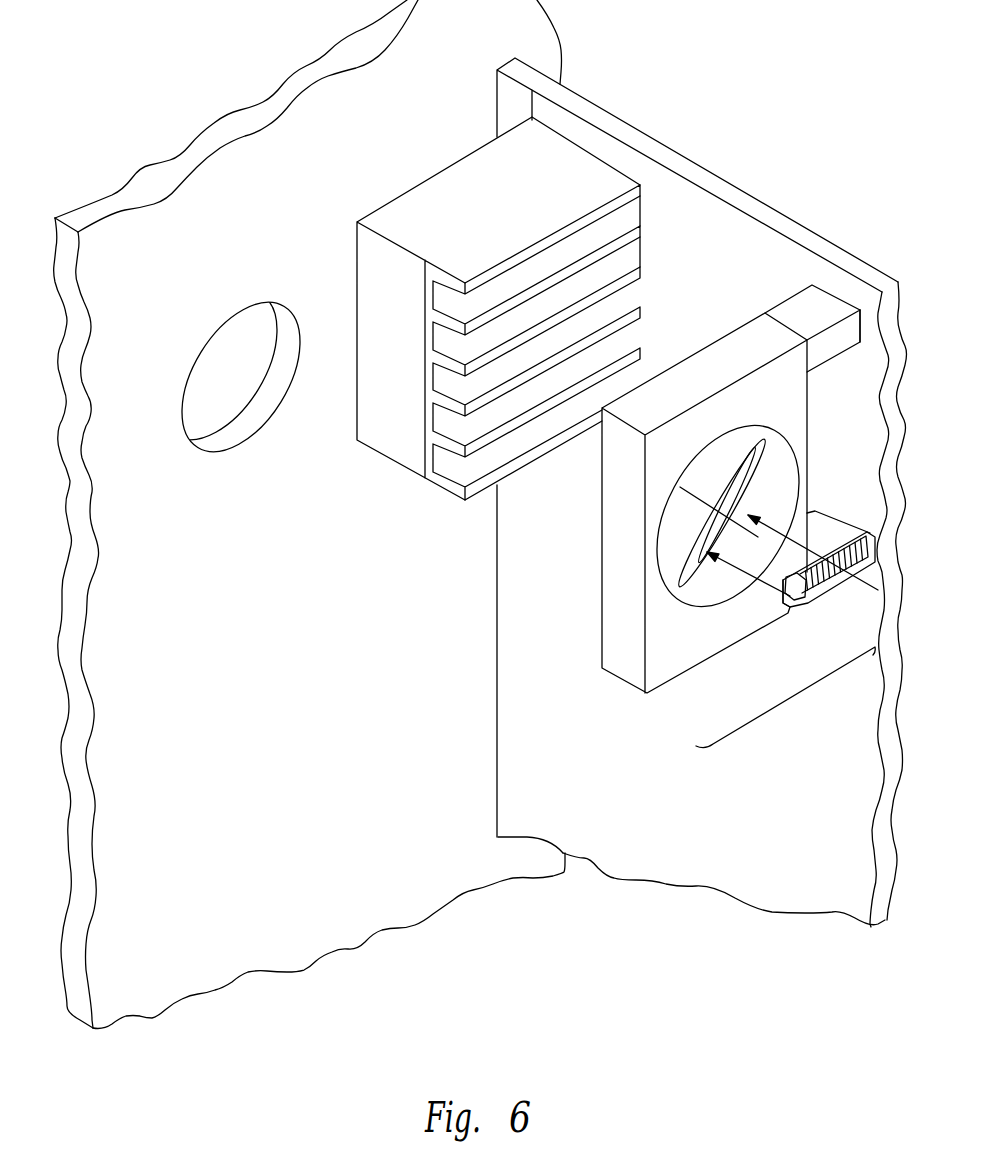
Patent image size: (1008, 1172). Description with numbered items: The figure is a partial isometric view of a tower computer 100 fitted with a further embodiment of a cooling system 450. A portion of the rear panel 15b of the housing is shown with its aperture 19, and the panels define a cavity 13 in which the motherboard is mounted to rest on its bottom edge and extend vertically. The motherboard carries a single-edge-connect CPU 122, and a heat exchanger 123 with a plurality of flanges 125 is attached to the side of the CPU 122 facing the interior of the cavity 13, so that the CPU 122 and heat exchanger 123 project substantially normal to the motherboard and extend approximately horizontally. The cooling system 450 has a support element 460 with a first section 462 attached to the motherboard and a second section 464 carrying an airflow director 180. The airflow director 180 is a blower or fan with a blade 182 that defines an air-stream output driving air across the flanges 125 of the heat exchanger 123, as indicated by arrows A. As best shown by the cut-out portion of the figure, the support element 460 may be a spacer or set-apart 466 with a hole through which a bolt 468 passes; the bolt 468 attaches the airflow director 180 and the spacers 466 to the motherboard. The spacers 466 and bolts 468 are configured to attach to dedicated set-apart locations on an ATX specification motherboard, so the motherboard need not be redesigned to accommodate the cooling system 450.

The cavity 13 is at (391, 735).
The rear panel 15b is at (127, 190).
The aperture 19 is at (278, 362).
The tower computer 100 is at (675, 88).
The single-edge-connect CPU 122 is at (517, 308).
The heat exchanger 123 is at (428, 264).
The flanges 125 is at (640, 272).
The airflow director 180 is at (730, 535).
The blade 182 is at (766, 458).
The cooling system 450 is at (810, 703).
The support element 460 is at (799, 456).
The first section 462 is at (863, 337).
The second section 464 is at (808, 366).
The spacer 466 is at (815, 292).
The bolt 468 is at (861, 585).
The arrows A is at (807, 513).